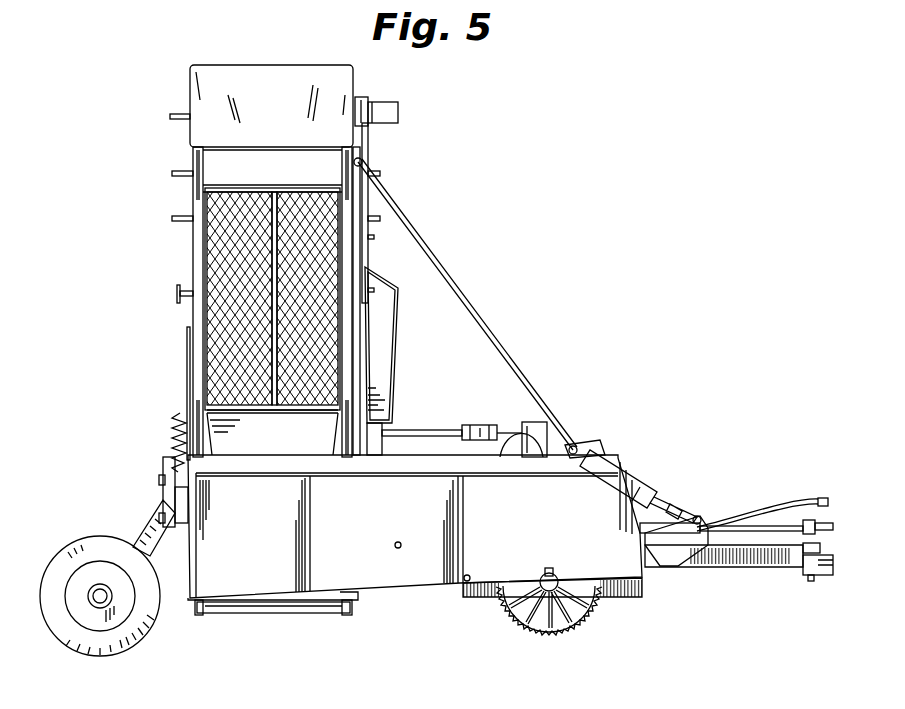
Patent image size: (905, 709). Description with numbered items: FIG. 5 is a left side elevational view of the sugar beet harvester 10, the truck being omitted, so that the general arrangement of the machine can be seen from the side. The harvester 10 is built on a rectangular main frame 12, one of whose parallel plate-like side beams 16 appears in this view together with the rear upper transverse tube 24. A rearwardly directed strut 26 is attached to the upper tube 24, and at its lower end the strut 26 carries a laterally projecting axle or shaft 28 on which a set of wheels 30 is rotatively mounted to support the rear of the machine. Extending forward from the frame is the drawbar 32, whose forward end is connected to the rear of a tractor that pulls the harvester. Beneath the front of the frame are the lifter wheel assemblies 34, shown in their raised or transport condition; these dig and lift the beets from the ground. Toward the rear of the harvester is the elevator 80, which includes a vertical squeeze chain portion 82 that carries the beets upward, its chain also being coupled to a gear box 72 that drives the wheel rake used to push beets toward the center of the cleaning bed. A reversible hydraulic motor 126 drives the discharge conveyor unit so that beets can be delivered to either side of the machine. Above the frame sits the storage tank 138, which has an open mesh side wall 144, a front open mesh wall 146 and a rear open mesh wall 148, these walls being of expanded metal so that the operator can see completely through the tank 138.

The sugar beet harvester 10 is at (490, 235).
The main frame 12 is at (404, 603).
The side beam 16 is at (425, 572).
The rear upper transverse tube 24 is at (180, 483).
The strut 26 is at (148, 520).
The shaft 28 is at (90, 590).
The wheels 30 is at (72, 648).
The drawbar 32 is at (727, 567).
The lifter wheel assemblies 34 is at (577, 622).
The gear box 72 is at (392, 365).
The elevator 80 is at (558, 0).
The vertical squeeze chain portion 82 is at (281, 618).
The reversible hydraulic motor 126 is at (400, 112).
The storage tank 138 is at (240, 357).
The side wall 144 is at (242, 302).
The front open mesh wall 146 is at (353, 317).
The rear open mesh wall 148 is at (208, 263).